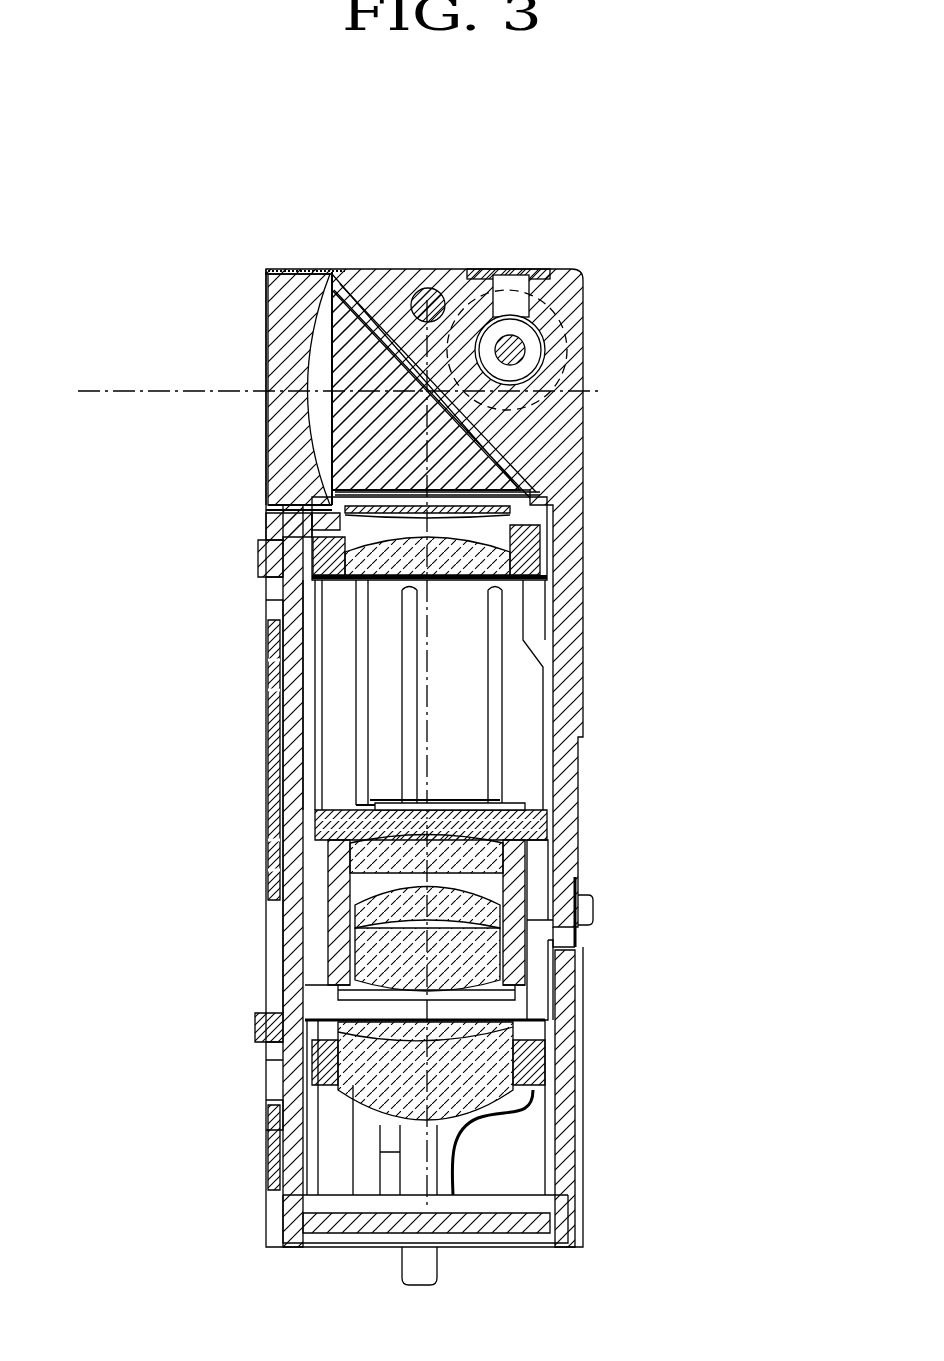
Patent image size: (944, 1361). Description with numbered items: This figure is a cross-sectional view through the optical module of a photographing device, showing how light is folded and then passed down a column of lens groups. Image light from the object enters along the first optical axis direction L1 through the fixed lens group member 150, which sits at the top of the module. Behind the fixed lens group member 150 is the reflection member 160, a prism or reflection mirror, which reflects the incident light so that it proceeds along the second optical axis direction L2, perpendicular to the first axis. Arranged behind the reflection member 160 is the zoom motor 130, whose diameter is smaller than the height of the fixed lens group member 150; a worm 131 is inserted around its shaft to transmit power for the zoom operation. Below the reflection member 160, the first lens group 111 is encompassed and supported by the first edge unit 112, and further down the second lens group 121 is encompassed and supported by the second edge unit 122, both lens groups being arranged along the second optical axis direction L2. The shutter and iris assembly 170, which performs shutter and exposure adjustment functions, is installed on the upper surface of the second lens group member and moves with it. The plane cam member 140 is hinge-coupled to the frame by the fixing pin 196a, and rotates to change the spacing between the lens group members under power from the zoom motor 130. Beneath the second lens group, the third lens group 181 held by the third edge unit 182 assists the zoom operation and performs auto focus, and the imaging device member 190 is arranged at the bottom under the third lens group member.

The reflection member 160 is at (366, 345).
The fixed lens group member 150 is at (277, 333).
The first optical axis direction L1 is at (120, 391).
The worm 131 is at (535, 343).
The zoom motor 130 is at (560, 366).
The first edge unit 112 is at (545, 545).
The first lens group 111 is at (543, 570).
The second optical axis direction L2 is at (427, 628).
The plane cam member 140 is at (262, 769).
The shutter and iris assembly 170 is at (298, 826).
The second edge unit 122 is at (340, 893).
The second lens group 121 is at (345, 910).
The fixing pin 196a is at (256, 1023).
The third edge unit 182 is at (320, 1055).
The third lens group 181 is at (360, 1085).
The imaging device member 190 is at (330, 1246).